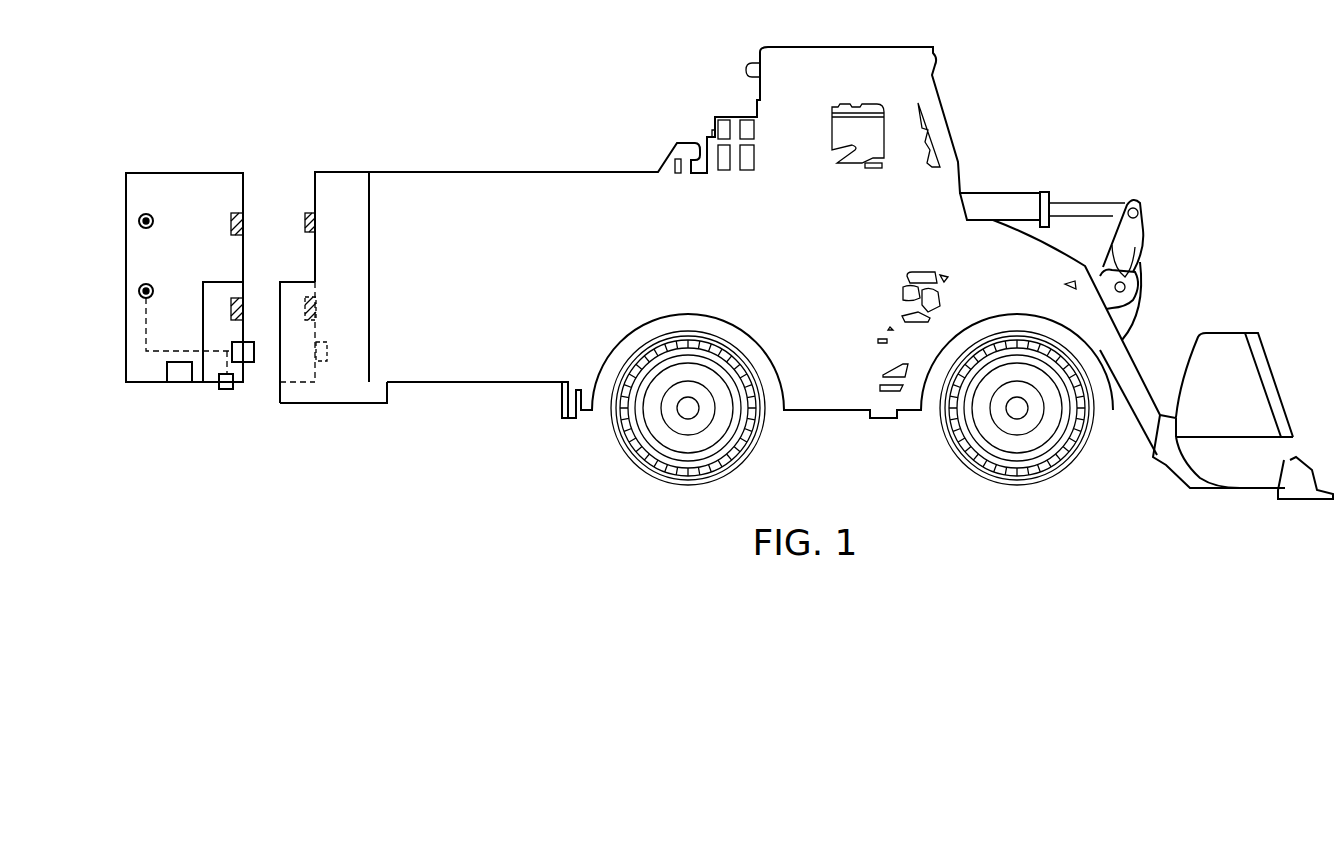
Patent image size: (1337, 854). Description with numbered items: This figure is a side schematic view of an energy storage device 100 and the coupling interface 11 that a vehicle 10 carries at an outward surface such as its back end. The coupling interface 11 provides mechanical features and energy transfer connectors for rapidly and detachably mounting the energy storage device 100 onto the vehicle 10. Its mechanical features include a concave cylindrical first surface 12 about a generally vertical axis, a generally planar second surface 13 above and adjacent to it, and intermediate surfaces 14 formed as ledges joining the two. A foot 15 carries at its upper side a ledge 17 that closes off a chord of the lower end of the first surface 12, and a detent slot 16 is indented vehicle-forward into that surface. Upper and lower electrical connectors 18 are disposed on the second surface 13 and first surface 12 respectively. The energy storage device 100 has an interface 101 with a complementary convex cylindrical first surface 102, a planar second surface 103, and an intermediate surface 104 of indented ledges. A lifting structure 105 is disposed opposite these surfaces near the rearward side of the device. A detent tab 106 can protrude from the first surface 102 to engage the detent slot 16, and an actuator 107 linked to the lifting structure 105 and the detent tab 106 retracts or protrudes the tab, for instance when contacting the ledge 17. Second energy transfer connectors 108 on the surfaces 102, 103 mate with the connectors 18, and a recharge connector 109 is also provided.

The vehicle 10 is at (453, 282).
The coupling interface 11 is at (356, 160).
The first surface 12 is at (352, 400).
The second surface 13 is at (313, 172).
The intermediate surfaces 14 is at (297, 275).
The foot 15 is at (320, 398).
The detent slot 16 is at (330, 362).
The ledge 17 is at (290, 363).
The electrical connectors 18 is at (300, 300).
The energy storage device 100 is at (125, 163).
The interface 101 is at (277, 145).
The first surface 102 is at (248, 331).
The second surface 103 is at (243, 172).
The intermediate surface 104 is at (217, 290).
The lifting structure 105 is at (139, 221).
The detent tab 106 is at (232, 352).
The actuator 107 is at (226, 390).
The second energy transfer connectors 108 is at (231, 222).
The recharge connector 109 is at (180, 384).